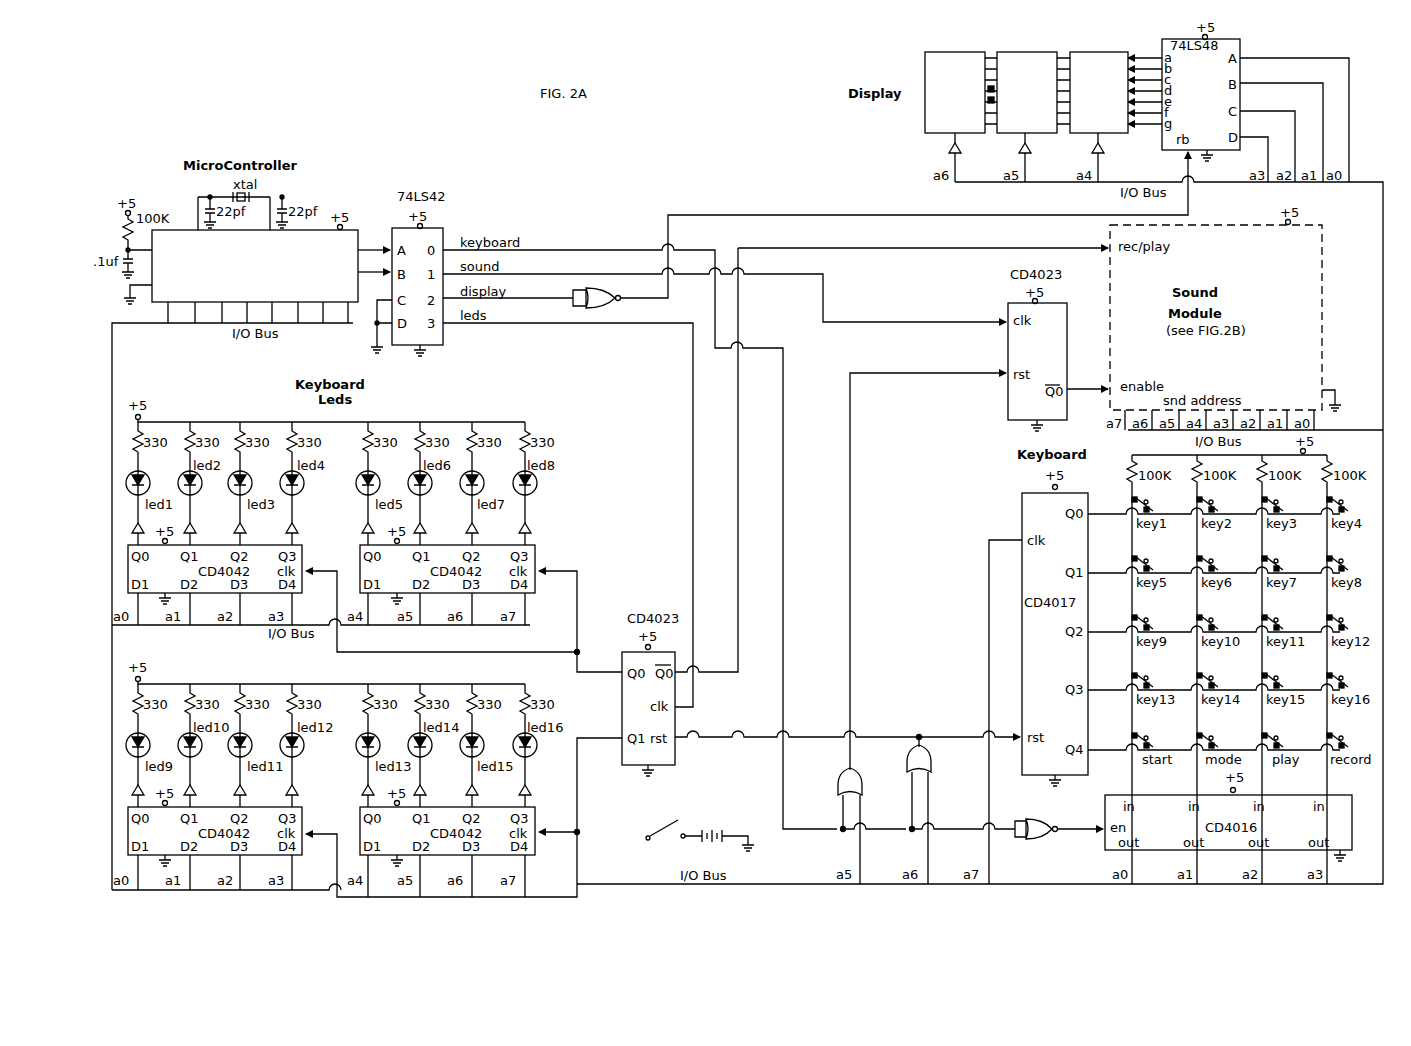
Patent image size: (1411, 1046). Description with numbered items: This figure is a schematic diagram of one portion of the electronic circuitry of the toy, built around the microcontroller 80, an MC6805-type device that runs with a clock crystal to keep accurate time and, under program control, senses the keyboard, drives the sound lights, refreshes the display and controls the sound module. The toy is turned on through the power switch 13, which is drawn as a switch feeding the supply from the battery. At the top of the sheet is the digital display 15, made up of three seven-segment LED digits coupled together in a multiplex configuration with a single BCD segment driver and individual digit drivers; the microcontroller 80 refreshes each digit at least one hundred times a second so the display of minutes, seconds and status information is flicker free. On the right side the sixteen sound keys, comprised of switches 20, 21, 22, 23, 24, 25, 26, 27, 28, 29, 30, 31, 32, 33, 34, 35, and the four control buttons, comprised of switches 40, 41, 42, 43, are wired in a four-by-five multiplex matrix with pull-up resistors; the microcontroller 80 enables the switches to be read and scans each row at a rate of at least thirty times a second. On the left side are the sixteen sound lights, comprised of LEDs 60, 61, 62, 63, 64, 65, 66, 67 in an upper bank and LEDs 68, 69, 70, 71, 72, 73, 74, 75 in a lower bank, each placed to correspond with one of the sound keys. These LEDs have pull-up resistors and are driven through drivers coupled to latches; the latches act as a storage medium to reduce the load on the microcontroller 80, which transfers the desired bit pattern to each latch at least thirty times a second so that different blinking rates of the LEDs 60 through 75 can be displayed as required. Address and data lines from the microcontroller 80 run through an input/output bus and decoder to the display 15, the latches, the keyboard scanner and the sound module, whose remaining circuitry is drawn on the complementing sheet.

The power switch 13 is at (694, 824).
The digital display 15 is at (955, 47).
The sound key switch 20 is at (1151, 497).
The sound key switch 21 is at (1216, 497).
The sound key switch 22 is at (1281, 497).
The sound key switch 23 is at (1346, 497).
The sound key switch 24 is at (1151, 556).
The sound key switch 25 is at (1216, 556).
The sound key switch 26 is at (1281, 556).
The sound key switch 27 is at (1346, 556).
The sound key switch 28 is at (1151, 615).
The sound key switch 29 is at (1216, 615).
The sound key switch 30 is at (1281, 615).
The sound key switch 31 is at (1346, 615).
The sound key switch 32 is at (1151, 673).
The sound key switch 33 is at (1216, 673).
The sound key switch 34 is at (1281, 673).
The sound key switch 35 is at (1346, 673).
The control button switch 40 is at (1151, 733).
The control button switch 41 is at (1216, 733).
The control button switch 42 is at (1281, 733).
The control button switch 43 is at (1346, 733).
The sound light LED 60 is at (147, 483).
The sound light LED 61 is at (199, 484).
The sound light LED 62 is at (249, 483).
The sound light LED 63 is at (301, 484).
The sound light LED 64 is at (377, 483).
The sound light LED 65 is at (429, 484).
The sound light LED 66 is at (481, 483).
The sound light LED 67 is at (533, 484).
The sound light LED 68 is at (147, 745).
The sound light LED 69 is at (199, 746).
The sound light LED 70 is at (249, 745).
The sound light LED 71 is at (301, 746).
The sound light LED 72 is at (377, 745).
The sound light LED 73 is at (429, 746).
The sound light LED 74 is at (481, 745).
The sound light LED 75 is at (533, 746).
The microcontroller 80 is at (255, 266).